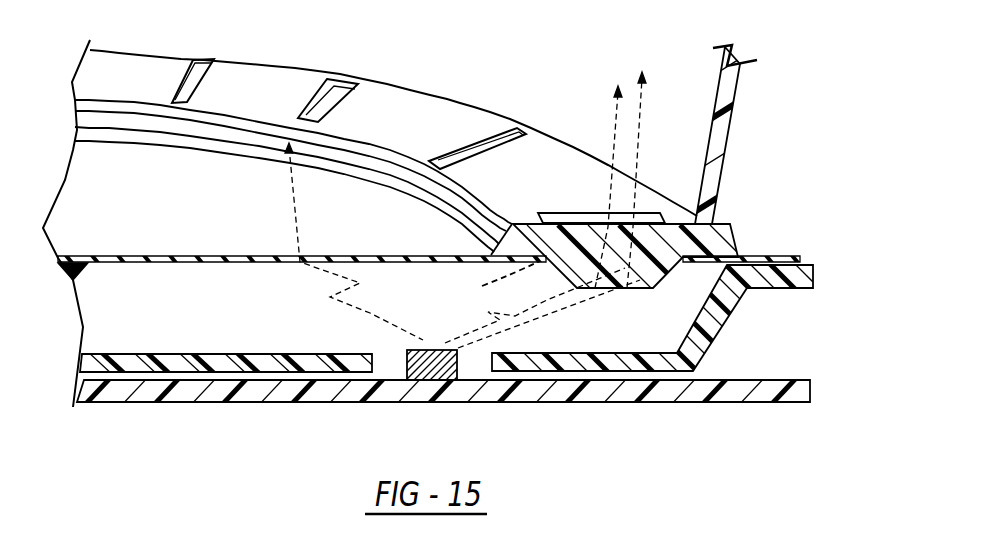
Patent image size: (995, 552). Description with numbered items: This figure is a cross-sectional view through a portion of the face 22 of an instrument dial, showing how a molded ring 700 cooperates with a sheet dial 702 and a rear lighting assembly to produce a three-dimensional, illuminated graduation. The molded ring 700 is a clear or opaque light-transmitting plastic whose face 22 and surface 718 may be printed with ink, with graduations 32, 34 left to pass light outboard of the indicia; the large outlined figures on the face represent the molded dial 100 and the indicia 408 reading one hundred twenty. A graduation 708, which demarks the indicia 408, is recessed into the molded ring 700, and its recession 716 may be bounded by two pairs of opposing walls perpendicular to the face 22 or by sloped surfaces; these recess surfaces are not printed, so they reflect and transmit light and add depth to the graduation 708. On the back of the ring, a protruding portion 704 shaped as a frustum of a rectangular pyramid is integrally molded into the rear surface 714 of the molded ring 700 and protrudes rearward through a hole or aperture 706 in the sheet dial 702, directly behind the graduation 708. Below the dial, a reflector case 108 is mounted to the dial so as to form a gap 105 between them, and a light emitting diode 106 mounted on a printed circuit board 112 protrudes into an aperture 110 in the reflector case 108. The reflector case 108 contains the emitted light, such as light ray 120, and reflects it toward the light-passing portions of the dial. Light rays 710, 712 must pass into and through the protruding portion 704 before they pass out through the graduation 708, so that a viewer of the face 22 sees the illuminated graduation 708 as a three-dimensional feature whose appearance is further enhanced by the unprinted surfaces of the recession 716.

The face 22 is at (216, 229).
The graduation 32 is at (312, 112).
The graduation 34 is at (197, 83).
The molded dial 100 is at (144, 187).
The gap 105 is at (149, 327).
The light emitting diode 106 is at (457, 362).
The reflector case 108 is at (715, 316).
The aperture 110 is at (373, 362).
The printed circuit board 112 is at (563, 402).
The light ray 120 is at (310, 220).
The indicia 408 is at (318, 196).
The molded ring 700 is at (417, 87).
The sheet dial 702 is at (87, 263).
The protruding portion 704 is at (662, 274).
The aperture 706 is at (481, 288).
The graduation 708 is at (665, 212).
The light ray 710 is at (612, 131).
The light ray 712 is at (640, 130).
The rear surface 714 is at (683, 257).
The recession 716 is at (578, 222).
The surface 718 is at (288, 101).